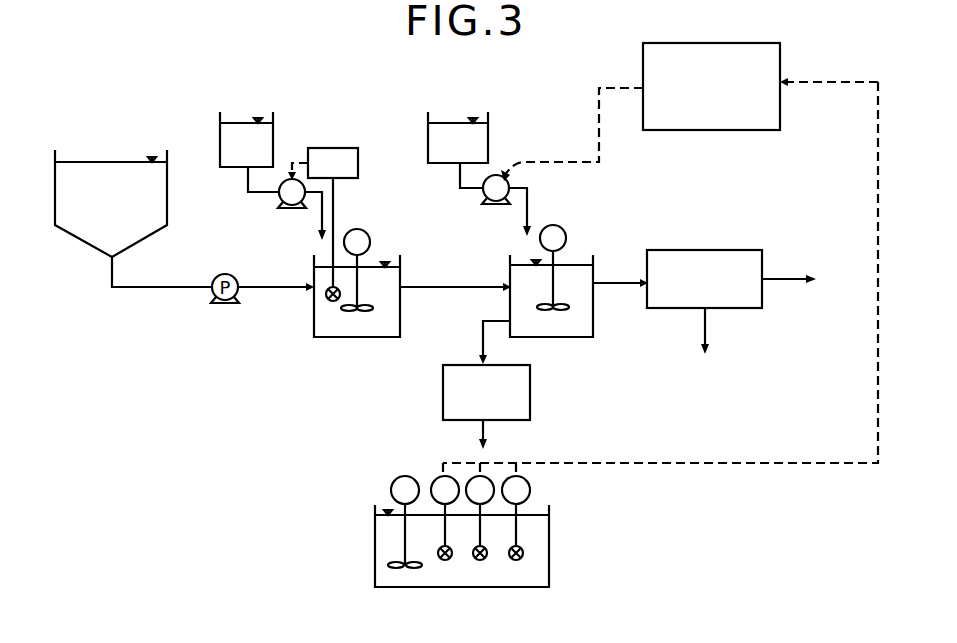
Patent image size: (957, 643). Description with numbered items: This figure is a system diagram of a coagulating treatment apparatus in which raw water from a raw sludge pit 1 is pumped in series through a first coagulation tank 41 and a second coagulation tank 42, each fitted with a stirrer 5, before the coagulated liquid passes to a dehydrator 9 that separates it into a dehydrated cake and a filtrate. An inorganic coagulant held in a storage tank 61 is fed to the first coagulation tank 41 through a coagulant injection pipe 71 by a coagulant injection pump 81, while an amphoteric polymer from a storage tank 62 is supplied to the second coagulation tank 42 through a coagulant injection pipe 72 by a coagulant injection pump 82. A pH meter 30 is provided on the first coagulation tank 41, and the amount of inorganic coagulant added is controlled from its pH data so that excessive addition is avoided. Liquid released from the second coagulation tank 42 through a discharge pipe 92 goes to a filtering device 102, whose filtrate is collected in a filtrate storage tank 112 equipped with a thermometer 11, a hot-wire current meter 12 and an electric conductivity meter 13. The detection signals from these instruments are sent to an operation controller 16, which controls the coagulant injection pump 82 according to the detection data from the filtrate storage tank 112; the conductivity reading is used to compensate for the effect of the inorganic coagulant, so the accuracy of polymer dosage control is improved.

The raw sludge pit 1 is at (55, 175).
The stirrer 5 is at (357, 229).
The dehydrator 9 is at (705, 250).
The thermometer 11 is at (445, 518).
The hot-wire current meter 12 is at (480, 518).
The electric conductivity meter 13 is at (516, 518).
The operation controller 16 is at (728, 130).
The pH meter 30 is at (333, 148).
The first coagulation tank 41 is at (314, 323).
The second coagulation tank 42 is at (593, 305).
The storage tank 61 is at (220, 140).
The storage tank 62 is at (428, 130).
The coagulant injection pipe 71 is at (248, 180).
The coagulant injection pipe 72 is at (460, 178).
The coagulant injection pump 81 is at (280, 203).
The coagulant injection pump 82 is at (486, 201).
The discharge pipe 92 is at (483, 338).
The filtering device 102 is at (443, 388).
The filtrate storage tank 112 is at (375, 565).